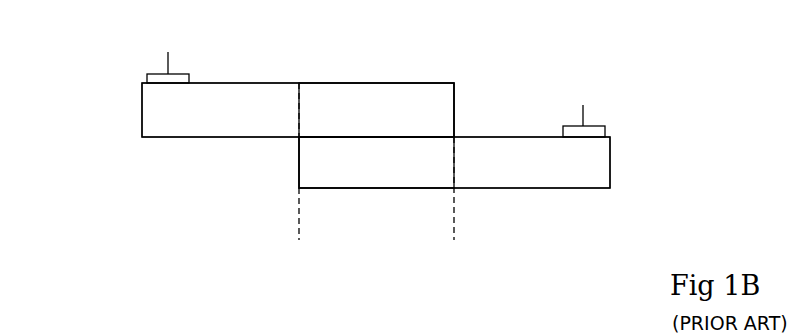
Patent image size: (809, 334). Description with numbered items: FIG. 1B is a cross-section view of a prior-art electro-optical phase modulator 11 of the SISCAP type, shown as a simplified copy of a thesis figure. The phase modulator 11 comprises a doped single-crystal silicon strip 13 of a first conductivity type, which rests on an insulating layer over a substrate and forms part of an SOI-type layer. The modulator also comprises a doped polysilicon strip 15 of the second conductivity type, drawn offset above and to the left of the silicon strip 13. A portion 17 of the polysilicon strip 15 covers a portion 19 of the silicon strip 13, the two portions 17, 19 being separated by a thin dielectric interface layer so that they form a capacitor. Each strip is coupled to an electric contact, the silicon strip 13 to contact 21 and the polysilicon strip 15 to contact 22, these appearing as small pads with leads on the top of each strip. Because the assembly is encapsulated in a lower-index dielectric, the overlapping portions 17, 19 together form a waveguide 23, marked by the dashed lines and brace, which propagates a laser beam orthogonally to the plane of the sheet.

The phase modulator 11 is at (373, 51).
The doped single-crystal silicon strip 13 is at (611, 170).
The doped polysilicon strip 15 is at (122, 118).
The portion of polysilicon strip 17 is at (405, 110).
The portion of single-crystal silicon strip 19 is at (348, 162).
The electric contact 21 is at (597, 130).
The electric contact 22 is at (160, 78).
The waveguide 23 is at (454, 240).